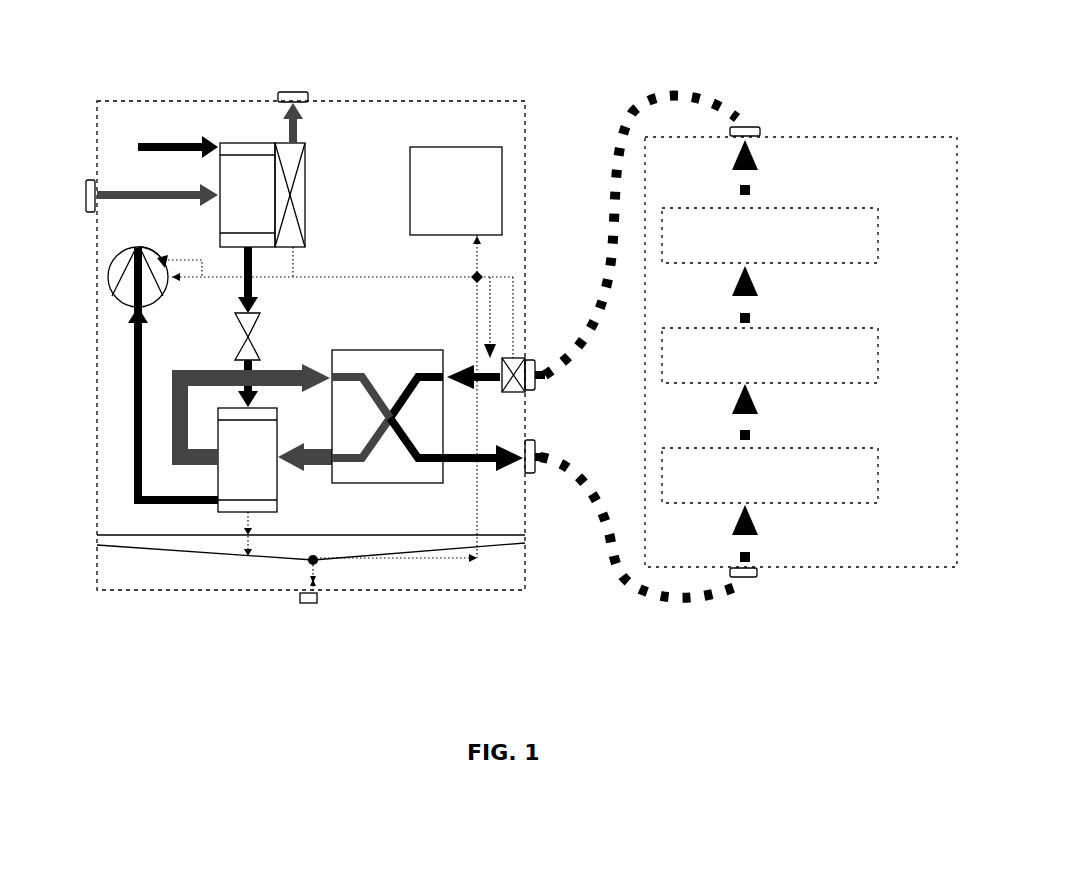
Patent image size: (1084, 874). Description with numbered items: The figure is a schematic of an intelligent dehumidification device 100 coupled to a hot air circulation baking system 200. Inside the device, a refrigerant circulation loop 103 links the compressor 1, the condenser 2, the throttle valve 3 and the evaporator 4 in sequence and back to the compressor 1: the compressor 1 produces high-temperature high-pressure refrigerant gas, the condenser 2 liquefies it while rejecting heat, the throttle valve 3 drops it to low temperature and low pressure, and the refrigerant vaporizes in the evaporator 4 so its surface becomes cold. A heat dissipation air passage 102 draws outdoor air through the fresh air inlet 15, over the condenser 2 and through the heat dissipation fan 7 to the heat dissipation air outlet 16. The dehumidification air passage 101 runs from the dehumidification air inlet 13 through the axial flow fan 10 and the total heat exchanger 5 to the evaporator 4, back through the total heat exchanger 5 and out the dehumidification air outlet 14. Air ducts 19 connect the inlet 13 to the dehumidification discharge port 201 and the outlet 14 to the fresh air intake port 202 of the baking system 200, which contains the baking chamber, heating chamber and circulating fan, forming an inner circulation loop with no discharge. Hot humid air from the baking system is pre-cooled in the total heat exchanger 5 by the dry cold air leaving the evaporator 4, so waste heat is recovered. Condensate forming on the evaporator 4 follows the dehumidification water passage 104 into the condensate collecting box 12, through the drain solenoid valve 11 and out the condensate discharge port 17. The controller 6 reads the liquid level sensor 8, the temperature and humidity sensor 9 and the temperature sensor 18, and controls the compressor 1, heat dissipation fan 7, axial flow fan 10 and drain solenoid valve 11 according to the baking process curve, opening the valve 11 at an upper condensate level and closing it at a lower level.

The compressor 1 is at (112, 297).
The condenser 2 is at (232, 141).
The throttle valve 3 is at (265, 335).
The evaporator 4 is at (218, 486).
The total heat exchanger 5 is at (382, 352).
The controller 6 is at (443, 147).
The heat dissipation fan 7 is at (307, 177).
The liquid level sensor 8 is at (318, 565).
The temperature and humidity sensor 9 is at (490, 357).
The axial flow fan 10 is at (520, 357).
The drain solenoid valve 11 is at (303, 583).
The condensate collecting box 12 is at (268, 547).
The dehumidification air inlet 13 is at (537, 390).
The dehumidification air outlet 14 is at (537, 448).
The fresh air inlet 15 is at (87, 178).
The heat dissipation air outlet 16 is at (285, 90).
The condensate discharge port 17 is at (310, 605).
The temperature sensor 18 is at (137, 232).
The air duct 19 is at (608, 207).
The dehumidification device 100 is at (468, 593).
The dehumidification air passage 101 is at (465, 395).
The heat dissipation air passage 102 is at (218, 143).
The refrigerant circulation loop 103 is at (138, 363).
The dehumidification water passage 104 is at (243, 523).
The hot air circulation baking system 200 is at (870, 568).
The dehumidification discharge port 201 is at (752, 125).
The fresh air intake port 202 is at (747, 579).